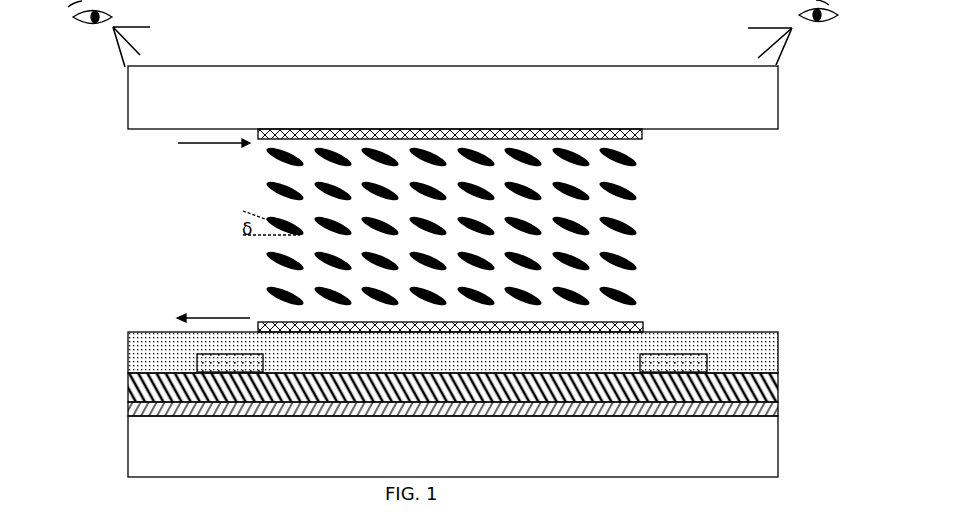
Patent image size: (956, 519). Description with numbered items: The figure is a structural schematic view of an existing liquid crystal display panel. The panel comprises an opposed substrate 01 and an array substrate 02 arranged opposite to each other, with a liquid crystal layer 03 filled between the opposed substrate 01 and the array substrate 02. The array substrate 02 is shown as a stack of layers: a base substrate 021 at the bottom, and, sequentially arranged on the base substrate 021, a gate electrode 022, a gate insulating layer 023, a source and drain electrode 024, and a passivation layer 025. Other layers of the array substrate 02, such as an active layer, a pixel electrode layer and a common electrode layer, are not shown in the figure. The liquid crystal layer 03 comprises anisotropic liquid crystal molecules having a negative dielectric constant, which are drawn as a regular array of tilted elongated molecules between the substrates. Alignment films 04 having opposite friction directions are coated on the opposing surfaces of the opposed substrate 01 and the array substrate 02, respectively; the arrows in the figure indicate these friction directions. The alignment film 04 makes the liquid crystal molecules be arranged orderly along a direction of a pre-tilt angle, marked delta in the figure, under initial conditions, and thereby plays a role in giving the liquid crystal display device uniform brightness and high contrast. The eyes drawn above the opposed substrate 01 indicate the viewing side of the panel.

The opposed substrate 01 is at (754, 100).
The array substrate 02 is at (496, 398).
The base substrate 021 is at (475, 446).
The gate electrode 022 is at (725, 409).
The gate insulating layer 023 is at (725, 390).
The source and drain electrode 024 is at (248, 362).
The passivation layer 025 is at (725, 351).
The liquid crystal layer 03 is at (700, 142).
The alignment film 04 is at (640, 137).